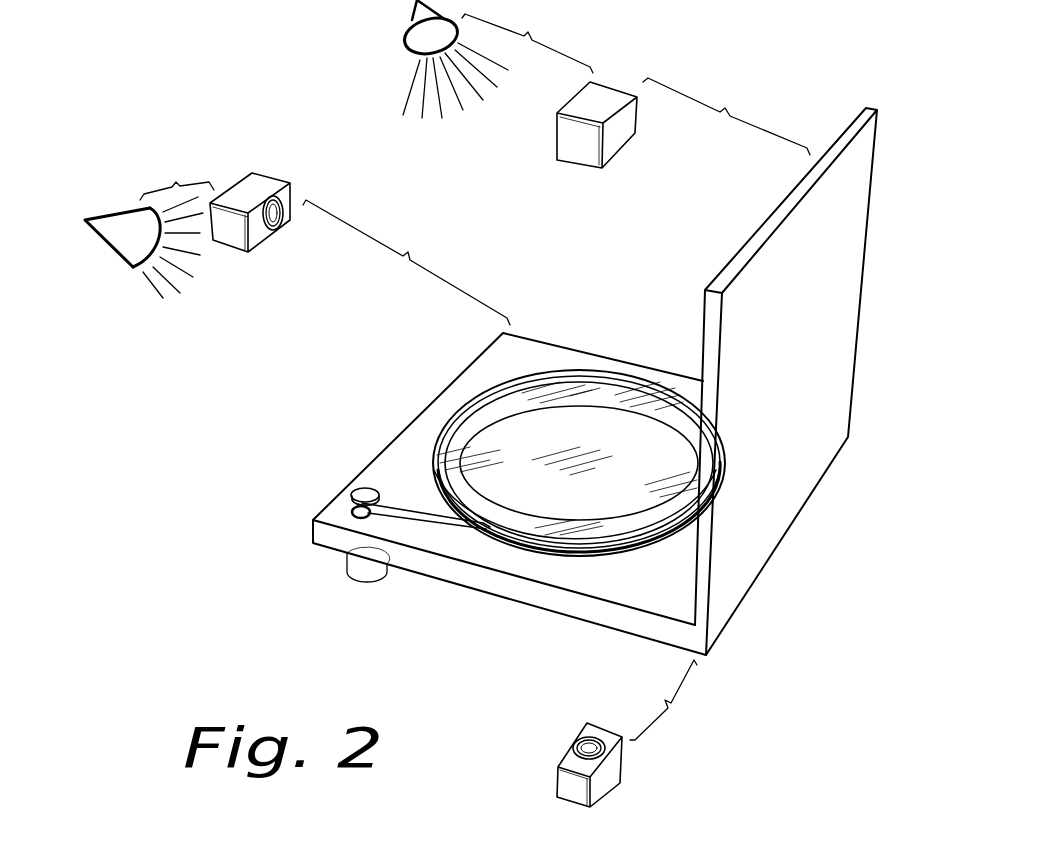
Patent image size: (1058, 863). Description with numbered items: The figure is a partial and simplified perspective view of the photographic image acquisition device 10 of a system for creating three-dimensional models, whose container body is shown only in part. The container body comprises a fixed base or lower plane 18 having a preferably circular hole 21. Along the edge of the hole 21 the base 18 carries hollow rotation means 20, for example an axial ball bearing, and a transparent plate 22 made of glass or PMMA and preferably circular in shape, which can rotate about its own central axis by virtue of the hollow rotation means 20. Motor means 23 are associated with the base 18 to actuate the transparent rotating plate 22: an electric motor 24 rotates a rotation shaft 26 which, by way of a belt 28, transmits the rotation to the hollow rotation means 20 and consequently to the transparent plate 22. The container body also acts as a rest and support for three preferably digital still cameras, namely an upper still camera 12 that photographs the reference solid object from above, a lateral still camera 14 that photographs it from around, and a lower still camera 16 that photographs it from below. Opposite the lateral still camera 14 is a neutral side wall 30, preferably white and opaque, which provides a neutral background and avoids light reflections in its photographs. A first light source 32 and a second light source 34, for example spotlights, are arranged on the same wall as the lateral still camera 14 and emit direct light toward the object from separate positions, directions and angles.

The photographic image acquisition device 10 is at (165, 405).
The upper still camera 12 is at (608, 90).
The lateral still camera 14 is at (257, 183).
The lower still camera 16 is at (620, 760).
The base 18 is at (632, 592).
The hollow rotation means 20 is at (492, 405).
The hole 21 is at (598, 393).
The transparent plate 22 is at (536, 432).
The motor means 23 is at (328, 513).
The electric motor 24 is at (346, 569).
The rotation shaft 26 is at (362, 489).
The belt 28 is at (488, 530).
The neutral side wall 30 is at (825, 358).
The first light source 32 is at (410, 18).
The second light source 34 is at (116, 218).